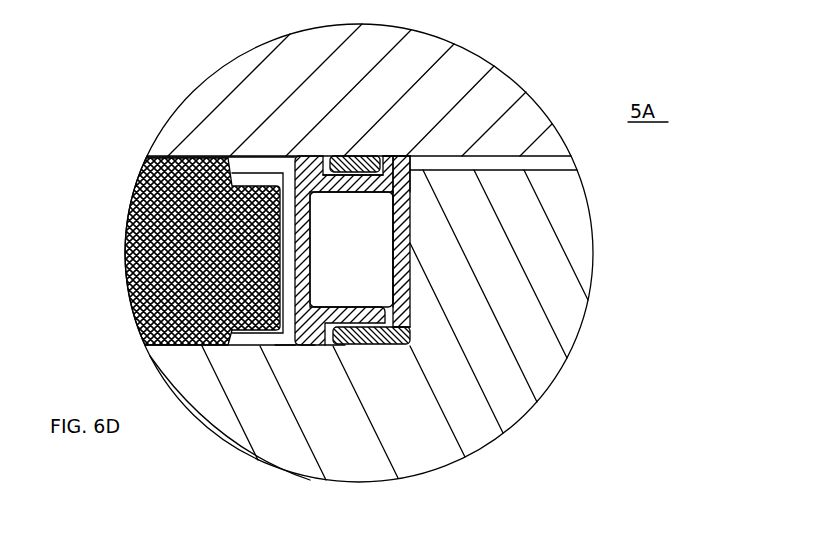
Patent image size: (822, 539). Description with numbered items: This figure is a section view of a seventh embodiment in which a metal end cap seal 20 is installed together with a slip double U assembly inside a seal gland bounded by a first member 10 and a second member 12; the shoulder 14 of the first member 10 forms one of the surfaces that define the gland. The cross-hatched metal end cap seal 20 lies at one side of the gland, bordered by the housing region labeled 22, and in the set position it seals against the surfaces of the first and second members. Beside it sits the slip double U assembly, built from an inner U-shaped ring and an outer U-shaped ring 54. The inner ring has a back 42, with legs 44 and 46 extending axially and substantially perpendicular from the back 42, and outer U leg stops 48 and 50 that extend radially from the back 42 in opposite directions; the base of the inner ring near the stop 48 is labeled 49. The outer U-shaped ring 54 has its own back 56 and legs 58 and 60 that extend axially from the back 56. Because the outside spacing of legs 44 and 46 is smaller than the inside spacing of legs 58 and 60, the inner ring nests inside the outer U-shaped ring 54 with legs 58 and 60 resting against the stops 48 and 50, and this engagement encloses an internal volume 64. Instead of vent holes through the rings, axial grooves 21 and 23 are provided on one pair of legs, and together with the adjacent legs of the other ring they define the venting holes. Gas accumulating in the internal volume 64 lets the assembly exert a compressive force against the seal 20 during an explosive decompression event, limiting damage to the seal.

The first member 10 is at (327, 455).
The second member 12 is at (430, 50).
The shoulder 14 is at (410, 333).
The metal end cap seal 20 is at (127, 293).
The axial groove 21 is at (411, 326).
The seal housing 22 is at (248, 150).
The axial groove 23 is at (410, 186).
The back 42 is at (263, 348).
The leg 44 is at (333, 348).
The leg 46 is at (355, 175).
The outer U leg stop 48 is at (306, 349).
The channel base 49 is at (290, 353).
The outer U leg stop 50 is at (304, 156).
The outer U-shaped ring 54 is at (412, 290).
The back 56 is at (410, 234).
The leg 58 is at (372, 345).
The leg 60 is at (378, 150).
The internal volume 64 is at (373, 261).